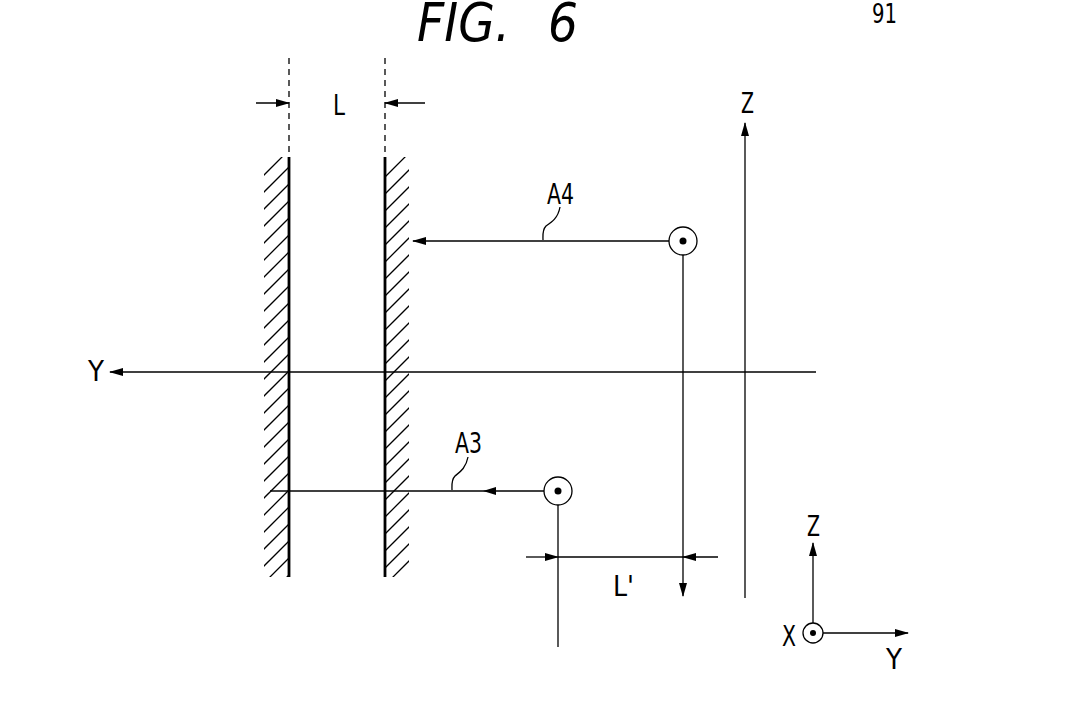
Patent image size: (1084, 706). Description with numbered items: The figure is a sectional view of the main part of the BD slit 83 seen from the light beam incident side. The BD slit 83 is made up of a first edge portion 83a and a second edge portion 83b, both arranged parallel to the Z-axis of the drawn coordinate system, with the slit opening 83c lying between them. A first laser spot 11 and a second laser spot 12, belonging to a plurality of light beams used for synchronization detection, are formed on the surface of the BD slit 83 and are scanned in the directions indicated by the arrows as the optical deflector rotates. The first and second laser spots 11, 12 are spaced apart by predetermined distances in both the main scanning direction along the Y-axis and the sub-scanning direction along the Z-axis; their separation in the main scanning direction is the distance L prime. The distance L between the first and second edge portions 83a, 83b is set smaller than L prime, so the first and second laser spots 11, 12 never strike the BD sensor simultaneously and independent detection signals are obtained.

The first laser spot 11 is at (548, 501).
The second laser spot 12 is at (697, 241).
The BD slit 83 is at (297, 417).
The first edge portion 83a is at (381, 558).
The second edge portion 83b is at (288, 558).
The slit opening 83c is at (308, 438).